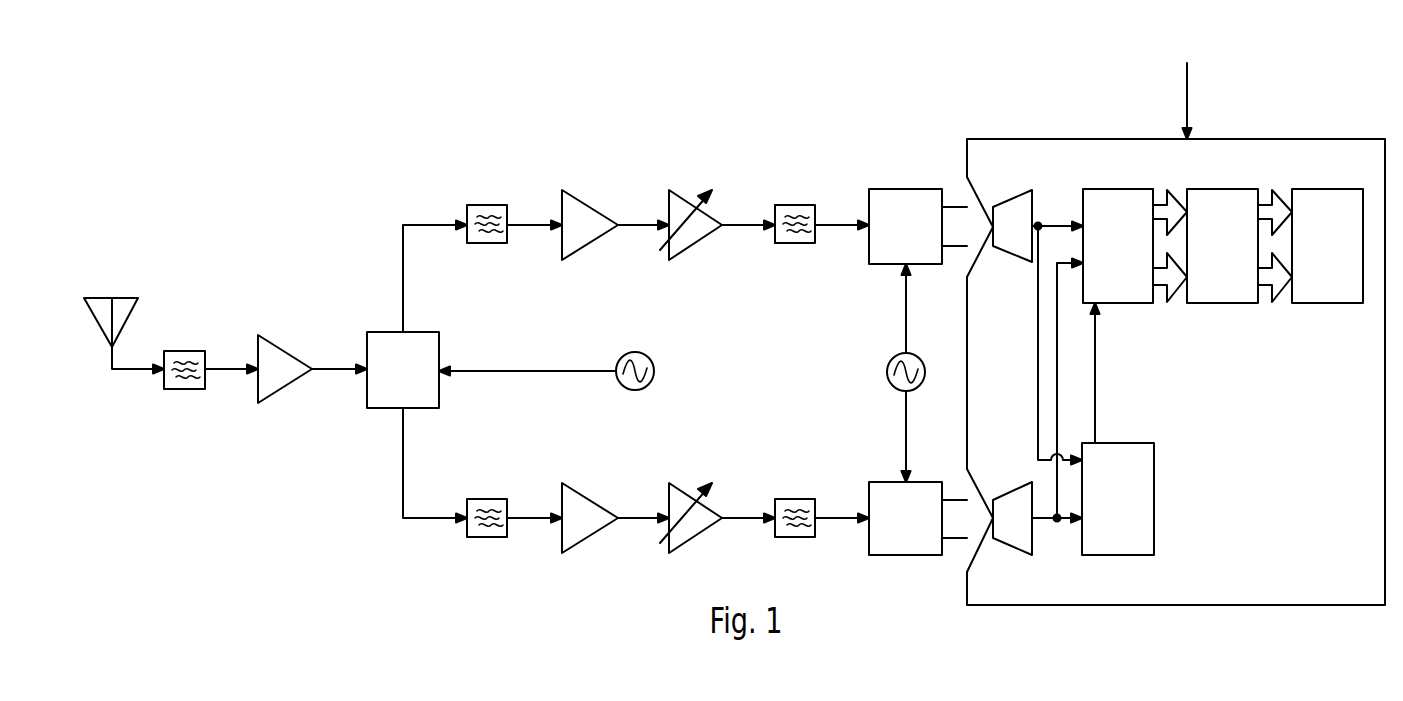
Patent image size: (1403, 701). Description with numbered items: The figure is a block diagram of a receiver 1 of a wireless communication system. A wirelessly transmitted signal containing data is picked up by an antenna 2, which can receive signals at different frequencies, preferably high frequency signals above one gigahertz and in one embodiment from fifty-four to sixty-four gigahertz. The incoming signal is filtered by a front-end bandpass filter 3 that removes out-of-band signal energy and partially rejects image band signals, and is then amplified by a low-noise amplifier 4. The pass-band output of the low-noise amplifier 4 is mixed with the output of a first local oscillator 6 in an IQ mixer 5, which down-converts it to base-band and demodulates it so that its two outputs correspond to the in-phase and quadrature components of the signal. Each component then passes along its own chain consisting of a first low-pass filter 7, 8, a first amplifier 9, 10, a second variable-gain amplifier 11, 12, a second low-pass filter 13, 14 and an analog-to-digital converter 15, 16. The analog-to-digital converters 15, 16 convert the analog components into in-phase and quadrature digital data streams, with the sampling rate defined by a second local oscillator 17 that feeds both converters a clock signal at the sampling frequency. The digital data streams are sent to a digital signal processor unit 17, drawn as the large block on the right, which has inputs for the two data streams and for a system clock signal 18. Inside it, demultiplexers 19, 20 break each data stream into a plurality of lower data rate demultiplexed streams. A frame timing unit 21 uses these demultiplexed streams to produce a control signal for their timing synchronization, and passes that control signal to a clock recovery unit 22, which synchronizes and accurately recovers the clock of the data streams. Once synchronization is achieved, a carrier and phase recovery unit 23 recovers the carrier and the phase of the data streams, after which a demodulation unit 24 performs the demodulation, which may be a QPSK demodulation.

The receiver 1 is at (350, 128).
The antenna 2 is at (128, 322).
The front-end bandpass filter 3 is at (186, 390).
The low-noise amplifier 4 is at (283, 394).
The IQ mixer 5 is at (385, 409).
The first local oscillator 6 is at (655, 371).
The first low-pass filter 7 is at (490, 205).
The first low-pass filter 8 is at (485, 499).
The first amplifier 9 is at (588, 207).
The first amplifier 10 is at (588, 500).
The second variable-gain amplifier 11 is at (685, 195).
The second variable-gain amplifier 12 is at (684, 487).
The second low-pass filter 13 is at (797, 205).
The second low-pass filter 14 is at (795, 499).
The analog-to-digital converter 15 is at (893, 189).
The analog-to-digital converter 16 is at (905, 556).
The second local oscillator / digital signal processor unit 17 is at (887, 372).
The system clock signal 18 is at (1188, 98).
The demultiplexer 19 is at (1007, 206).
The demultiplexer 20 is at (1007, 500).
The frame timing unit 21 is at (1154, 495).
The clock recovery unit 22 is at (1130, 304).
The carrier and phase recovery unit 23 is at (1224, 304).
The demodulation unit 24 is at (1325, 304).